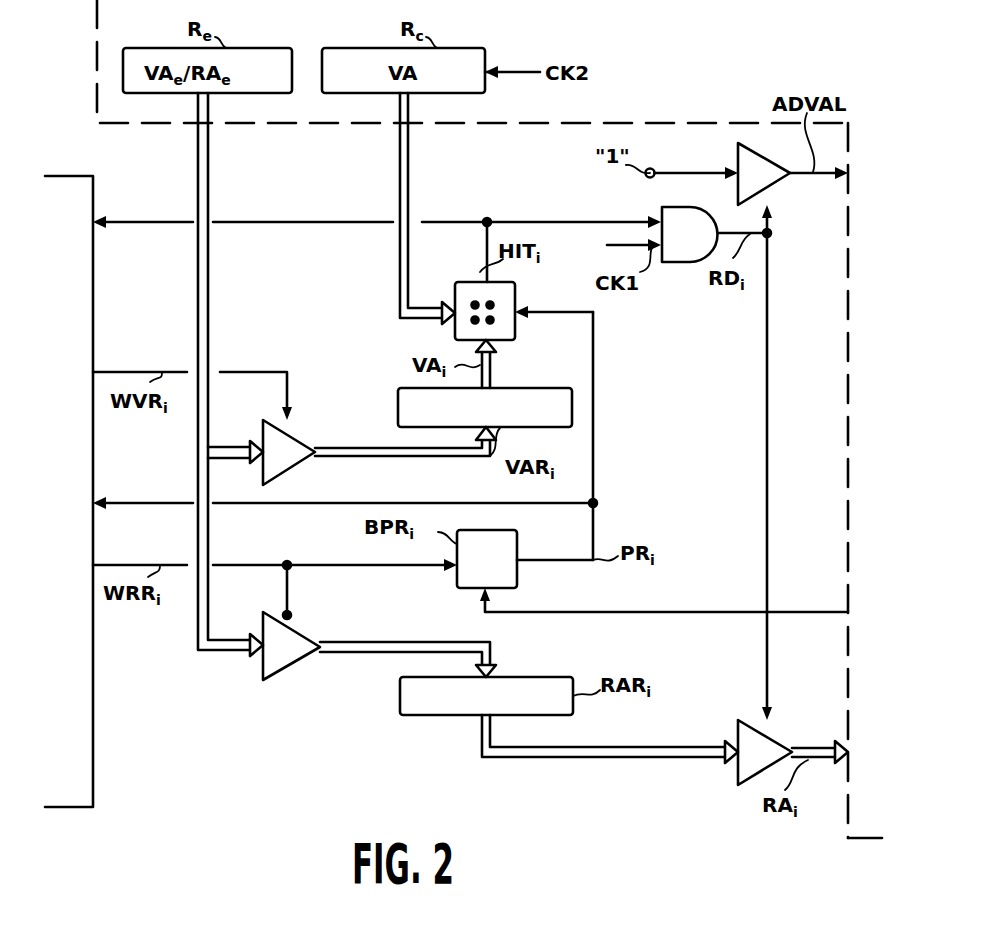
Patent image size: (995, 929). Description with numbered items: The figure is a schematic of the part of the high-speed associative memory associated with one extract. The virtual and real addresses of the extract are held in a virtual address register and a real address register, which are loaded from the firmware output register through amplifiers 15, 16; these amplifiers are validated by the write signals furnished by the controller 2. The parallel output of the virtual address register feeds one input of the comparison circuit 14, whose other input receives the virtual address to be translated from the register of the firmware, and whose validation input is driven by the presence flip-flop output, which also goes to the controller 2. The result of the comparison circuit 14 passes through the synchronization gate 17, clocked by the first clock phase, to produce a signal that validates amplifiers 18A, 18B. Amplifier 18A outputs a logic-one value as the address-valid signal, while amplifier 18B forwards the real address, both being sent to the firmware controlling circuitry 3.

The controller 2 is at (95, 797).
The firmware controlling circuitry 3 is at (860, 838).
The comparison circuit 14 is at (515, 322).
The amplifier 15 is at (307, 438).
The amplifier 16 is at (303, 628).
The synchronization gate 17 is at (686, 263).
The amplifier 18A is at (738, 155).
The amplifier 18B is at (740, 780).